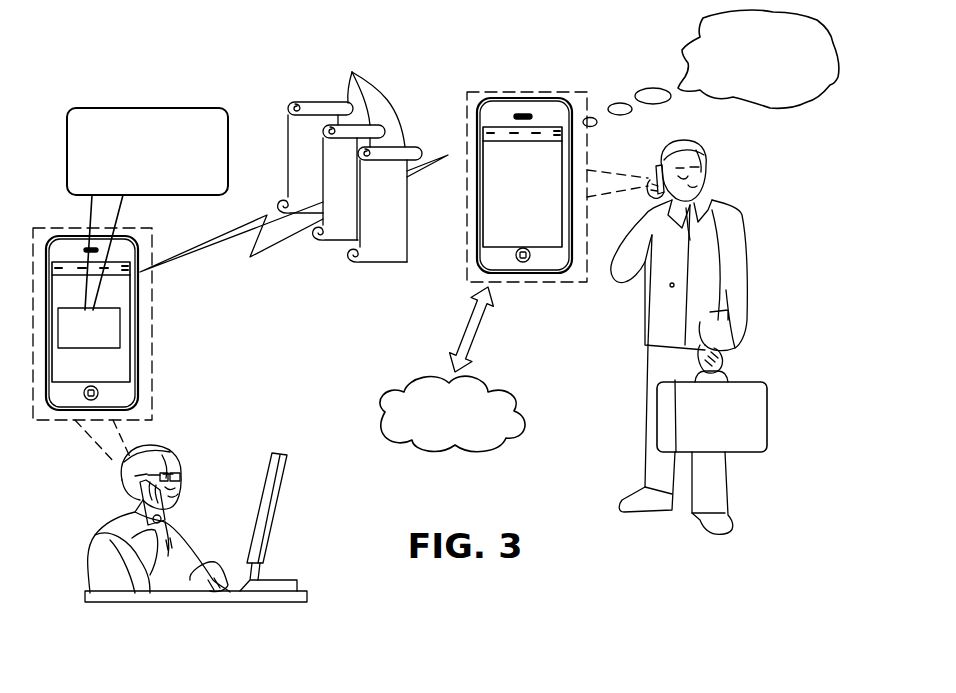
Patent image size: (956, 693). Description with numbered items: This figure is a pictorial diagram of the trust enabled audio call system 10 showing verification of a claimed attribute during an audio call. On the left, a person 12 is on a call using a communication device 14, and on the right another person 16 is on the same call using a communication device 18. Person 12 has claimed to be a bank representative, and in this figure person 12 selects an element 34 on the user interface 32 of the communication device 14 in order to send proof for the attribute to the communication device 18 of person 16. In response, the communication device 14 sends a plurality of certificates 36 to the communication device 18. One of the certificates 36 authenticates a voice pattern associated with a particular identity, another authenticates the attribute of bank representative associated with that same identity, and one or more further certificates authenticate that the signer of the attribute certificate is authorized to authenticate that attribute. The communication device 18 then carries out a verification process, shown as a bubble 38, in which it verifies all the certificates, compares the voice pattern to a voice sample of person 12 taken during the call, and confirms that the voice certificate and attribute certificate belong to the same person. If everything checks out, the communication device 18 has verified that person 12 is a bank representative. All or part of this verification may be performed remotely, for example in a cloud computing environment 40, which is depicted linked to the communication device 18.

The trust enabled audio call system 10 is at (248, 78).
The person 12 is at (108, 520).
The communication device 14 is at (138, 378).
The person 16 is at (727, 200).
The communication device 18 is at (477, 127).
The user interface 32 is at (120, 322).
The element 34 is at (133, 108).
The certificates 36 is at (350, 152).
The verification process bubble 38 is at (682, 50).
The cloud computing environment 40 is at (503, 388).